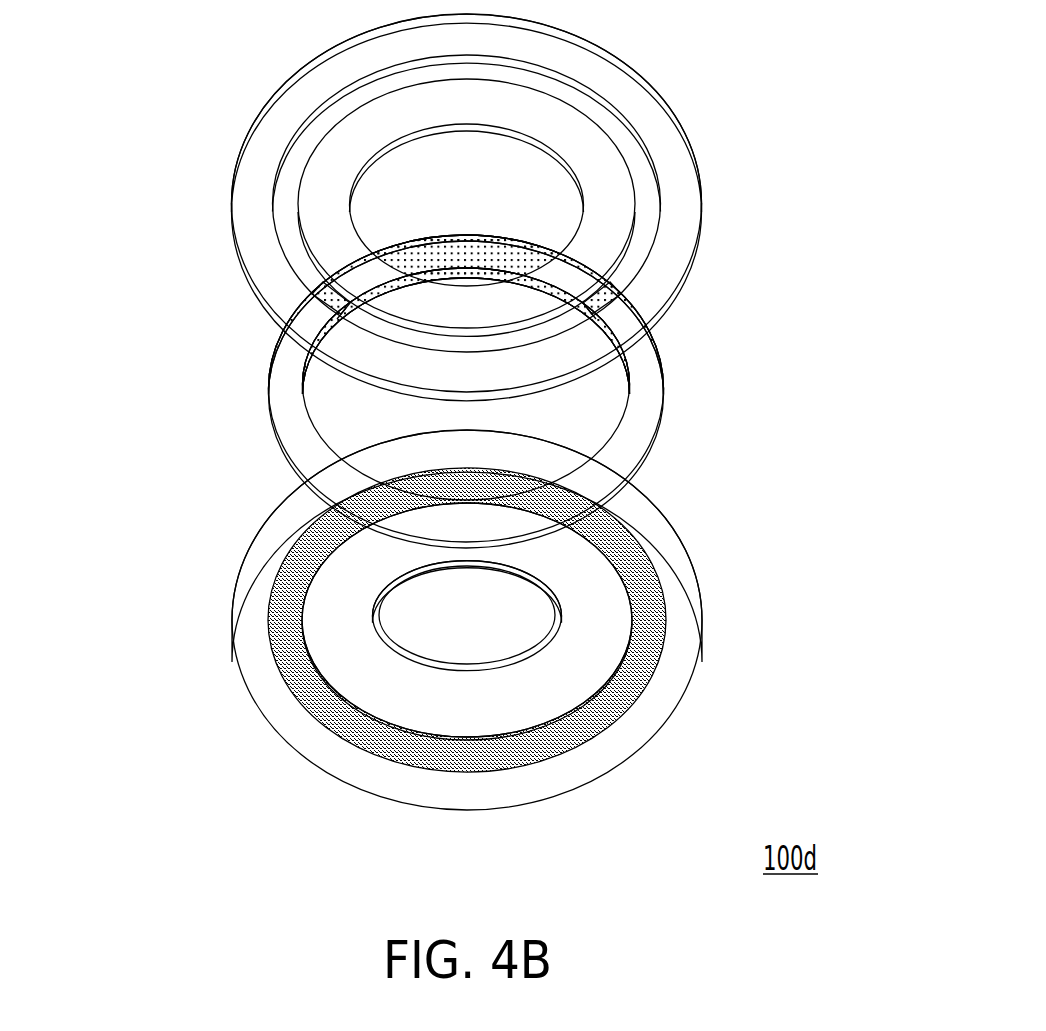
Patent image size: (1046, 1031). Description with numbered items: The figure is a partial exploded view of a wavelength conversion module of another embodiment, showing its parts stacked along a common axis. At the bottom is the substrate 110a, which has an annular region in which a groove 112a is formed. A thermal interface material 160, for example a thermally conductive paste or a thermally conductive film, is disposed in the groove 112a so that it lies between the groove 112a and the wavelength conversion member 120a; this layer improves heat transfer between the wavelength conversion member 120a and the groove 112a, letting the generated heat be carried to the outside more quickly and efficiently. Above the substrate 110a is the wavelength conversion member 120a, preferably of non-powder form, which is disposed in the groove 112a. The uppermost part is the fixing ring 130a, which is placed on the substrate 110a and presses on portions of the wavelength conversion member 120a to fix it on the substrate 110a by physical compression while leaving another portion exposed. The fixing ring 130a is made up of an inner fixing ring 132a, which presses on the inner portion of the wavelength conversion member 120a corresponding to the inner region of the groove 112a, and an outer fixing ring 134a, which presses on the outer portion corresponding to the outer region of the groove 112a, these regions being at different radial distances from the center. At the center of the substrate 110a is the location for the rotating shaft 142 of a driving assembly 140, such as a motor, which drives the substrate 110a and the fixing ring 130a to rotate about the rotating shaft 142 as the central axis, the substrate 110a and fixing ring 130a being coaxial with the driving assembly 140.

The substrate 110a is at (700, 597).
The groove 112a is at (312, 598).
The thermal interface material 160 is at (640, 552).
The rotating shaft 142 is at (435, 637).
The driving assembly 140 is at (312, 690).
The wavelength conversion member 120a is at (648, 390).
The fixing ring 130a is at (534, 278).
The inner fixing ring 132a is at (590, 150).
The outer fixing ring 134a is at (641, 98).